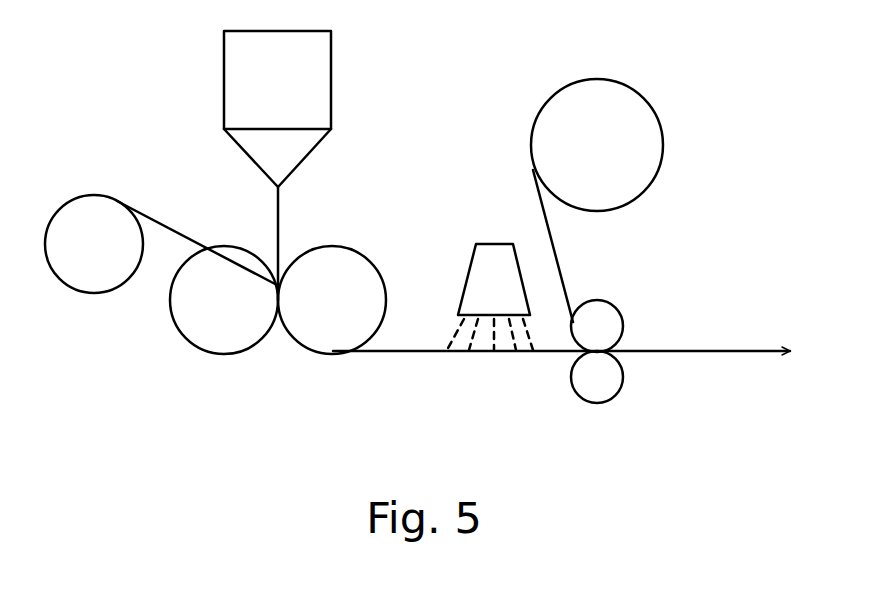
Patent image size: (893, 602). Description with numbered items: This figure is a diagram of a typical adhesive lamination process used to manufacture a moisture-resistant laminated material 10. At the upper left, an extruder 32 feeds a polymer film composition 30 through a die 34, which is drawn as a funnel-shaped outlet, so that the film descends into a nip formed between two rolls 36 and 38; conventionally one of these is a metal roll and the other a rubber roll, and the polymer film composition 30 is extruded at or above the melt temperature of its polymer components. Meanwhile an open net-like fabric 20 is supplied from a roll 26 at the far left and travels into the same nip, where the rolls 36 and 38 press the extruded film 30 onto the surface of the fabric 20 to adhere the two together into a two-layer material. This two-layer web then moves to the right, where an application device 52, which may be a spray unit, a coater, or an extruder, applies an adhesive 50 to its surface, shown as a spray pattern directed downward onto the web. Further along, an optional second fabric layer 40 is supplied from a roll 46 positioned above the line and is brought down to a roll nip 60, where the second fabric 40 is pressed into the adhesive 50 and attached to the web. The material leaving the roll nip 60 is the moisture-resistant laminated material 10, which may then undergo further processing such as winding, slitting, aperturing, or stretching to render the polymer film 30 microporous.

The moisture-resistant laminated material 10 is at (722, 360).
The open net-like fabric 20 is at (177, 222).
The roll 26 is at (90, 222).
The polymer film composition 30 is at (283, 222).
The extruder 32 is at (298, 72).
The die 34 is at (272, 154).
The roll 36 is at (213, 302).
The roll 38 is at (345, 285).
The second fabric layer 40 is at (560, 262).
The roll 46 is at (625, 128).
The adhesive 50 is at (458, 333).
The application device 52 is at (495, 267).
The roll nip 60 is at (595, 348).